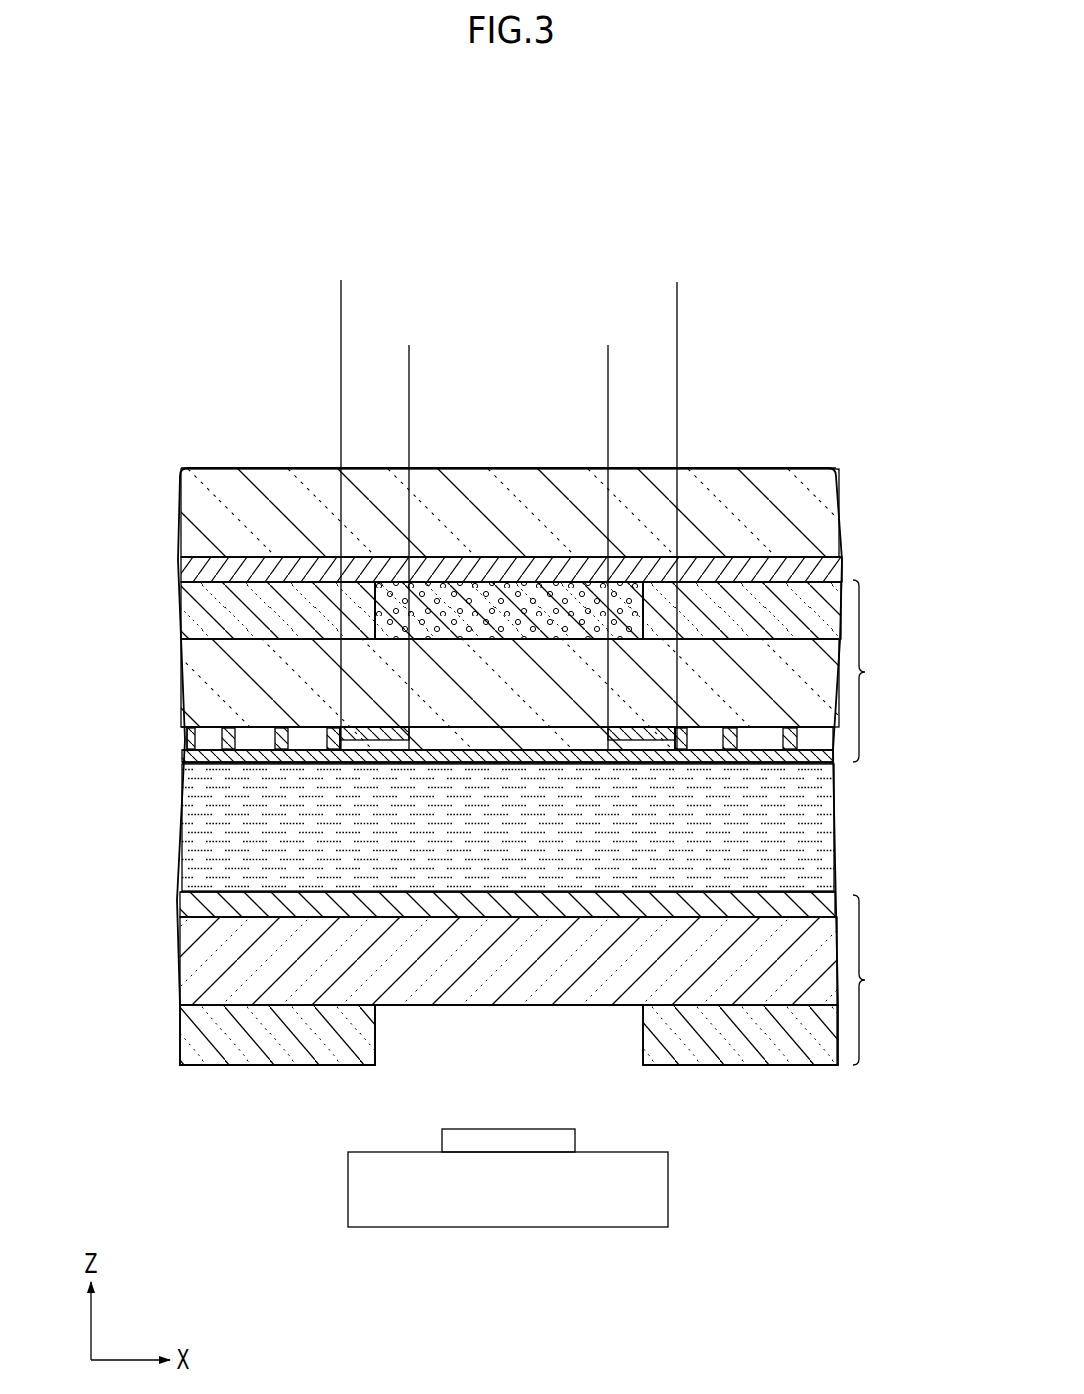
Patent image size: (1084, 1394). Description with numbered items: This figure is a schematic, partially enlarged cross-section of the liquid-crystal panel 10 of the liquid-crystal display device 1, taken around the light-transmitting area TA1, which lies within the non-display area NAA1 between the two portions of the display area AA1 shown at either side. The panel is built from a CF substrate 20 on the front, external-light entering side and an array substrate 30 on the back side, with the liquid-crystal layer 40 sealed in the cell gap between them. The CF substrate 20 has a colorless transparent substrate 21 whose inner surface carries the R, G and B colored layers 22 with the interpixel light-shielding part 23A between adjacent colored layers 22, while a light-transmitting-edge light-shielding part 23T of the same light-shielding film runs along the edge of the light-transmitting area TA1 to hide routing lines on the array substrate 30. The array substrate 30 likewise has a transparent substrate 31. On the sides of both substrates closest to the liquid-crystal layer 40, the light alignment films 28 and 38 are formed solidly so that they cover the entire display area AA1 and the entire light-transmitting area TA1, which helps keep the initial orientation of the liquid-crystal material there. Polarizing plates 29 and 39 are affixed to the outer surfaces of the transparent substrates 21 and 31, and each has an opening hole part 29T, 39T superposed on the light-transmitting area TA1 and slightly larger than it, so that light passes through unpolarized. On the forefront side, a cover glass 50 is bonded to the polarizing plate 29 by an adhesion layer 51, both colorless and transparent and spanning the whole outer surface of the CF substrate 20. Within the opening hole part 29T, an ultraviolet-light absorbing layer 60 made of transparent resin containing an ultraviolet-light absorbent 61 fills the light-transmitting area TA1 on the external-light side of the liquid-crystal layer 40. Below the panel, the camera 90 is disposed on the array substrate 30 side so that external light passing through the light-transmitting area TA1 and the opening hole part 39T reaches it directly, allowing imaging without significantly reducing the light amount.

The liquid-crystal display device 1 is at (908, 305).
The liquid-crystal panel 10 is at (195, 500).
The CF substrate 20 is at (876, 671).
The transparent substrate 21 is at (730, 688).
The colored layer 22 is at (230, 757).
The interpixel light-shielding part 23A is at (232, 735).
The light-transmitting-edge light-shielding part 23T is at (376, 727).
The light alignment film 28 is at (230, 766).
The polarizing plate 29 is at (265, 600).
The opening hole part 29T is at (392, 600).
The array substrate 30 is at (541, 980).
The transparent substrate 31 is at (779, 975).
The light alignment film 38 is at (225, 893).
The polarizing plate 39 is at (230, 1038).
The opening hole part 39T is at (378, 1030).
The liquid-crystal layer 40 is at (760, 842).
The cover glass 50 is at (820, 492).
The adhesion layer 51 is at (790, 560).
The ultraviolet-light absorbing layer 60 is at (563, 594).
The ultraviolet-light absorbent 61 is at (621, 598).
The camera 90 is at (597, 1202).
The display area AA1 is at (341, 327).
The non-display area NAA1 is at (677, 300).
The light-transmitting area TA1 is at (608, 363).